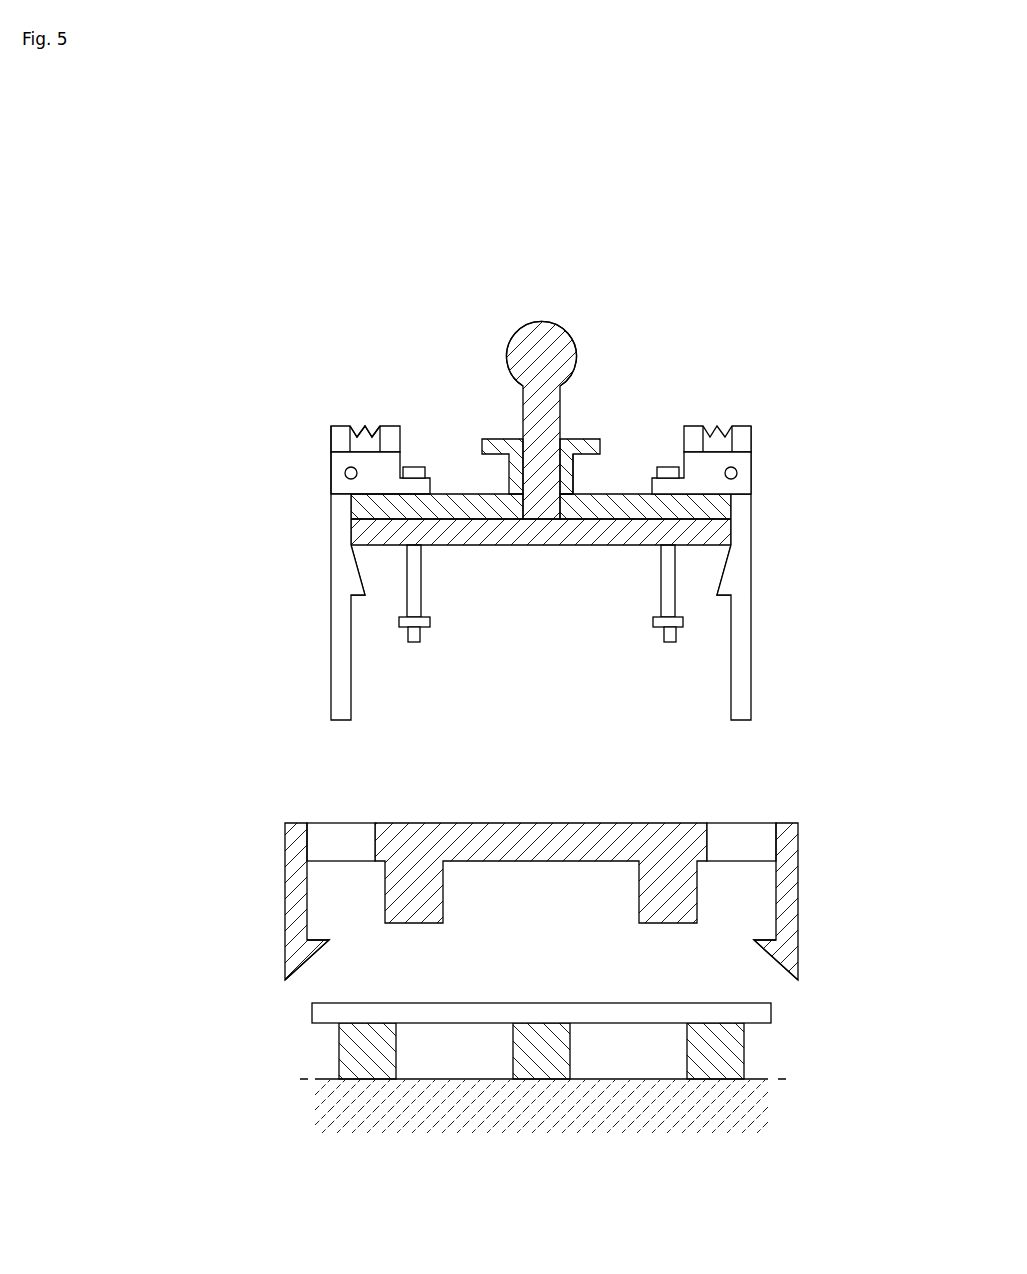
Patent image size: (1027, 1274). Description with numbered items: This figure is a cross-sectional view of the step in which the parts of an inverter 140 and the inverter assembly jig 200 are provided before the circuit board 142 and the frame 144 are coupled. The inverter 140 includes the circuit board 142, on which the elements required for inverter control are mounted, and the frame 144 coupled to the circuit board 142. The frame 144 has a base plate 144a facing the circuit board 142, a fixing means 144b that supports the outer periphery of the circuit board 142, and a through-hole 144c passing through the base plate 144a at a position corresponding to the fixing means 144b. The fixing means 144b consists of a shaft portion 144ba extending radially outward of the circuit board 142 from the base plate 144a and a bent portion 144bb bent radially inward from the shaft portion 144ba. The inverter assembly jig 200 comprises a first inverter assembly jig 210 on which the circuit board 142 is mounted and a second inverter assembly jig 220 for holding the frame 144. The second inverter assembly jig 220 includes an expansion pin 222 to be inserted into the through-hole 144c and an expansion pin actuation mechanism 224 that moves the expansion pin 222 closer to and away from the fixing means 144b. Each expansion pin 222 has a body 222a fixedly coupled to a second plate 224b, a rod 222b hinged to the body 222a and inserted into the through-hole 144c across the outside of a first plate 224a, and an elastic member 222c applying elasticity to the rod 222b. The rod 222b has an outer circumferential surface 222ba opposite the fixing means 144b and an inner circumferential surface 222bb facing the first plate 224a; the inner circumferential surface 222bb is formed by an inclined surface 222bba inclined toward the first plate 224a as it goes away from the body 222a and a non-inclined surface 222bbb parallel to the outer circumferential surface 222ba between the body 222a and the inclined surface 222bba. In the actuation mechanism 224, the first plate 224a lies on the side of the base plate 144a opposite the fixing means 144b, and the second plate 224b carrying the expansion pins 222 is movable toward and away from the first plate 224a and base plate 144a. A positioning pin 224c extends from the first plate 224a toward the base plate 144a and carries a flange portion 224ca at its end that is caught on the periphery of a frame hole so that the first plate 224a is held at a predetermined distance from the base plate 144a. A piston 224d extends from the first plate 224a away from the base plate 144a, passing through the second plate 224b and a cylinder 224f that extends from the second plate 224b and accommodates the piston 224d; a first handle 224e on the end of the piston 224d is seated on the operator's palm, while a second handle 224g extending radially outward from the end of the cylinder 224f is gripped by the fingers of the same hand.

The inverter 140 is at (796, 94).
The circuit board 142 is at (210, 1005).
The frame 144 is at (185, 822).
The base plate 144a is at (540, 835).
The fixing means 144b is at (183, 898).
The shaft portion 144ba is at (305, 900).
The bent portion 144bb is at (305, 946).
The through-hole 144c is at (352, 835).
The inverter assembly jig 200 is at (796, 183).
The first inverter assembly jig 210 is at (232, 1047).
The second inverter assembly jig 220 is at (450, 217).
The expansion pin 222 is at (385, 414).
The body 222a is at (340, 480).
The rod 222b is at (330, 433).
The elastic member 222c is at (360, 424).
The outer circumferential surface 222ba is at (331, 660).
The inner circumferential surface 222bb is at (212, 530).
The inclined surface 222bba is at (370, 570).
The non-inclined surface 222bbb is at (358, 540).
The expansion pin actuation mechanism 224 is at (517, 319).
The first plate 224a is at (717, 535).
The second plate 224b is at (717, 507).
The positioning pin 224c is at (668, 603).
The flange portion 224ca is at (683, 625).
The piston 224d is at (551, 403).
The first handle 224e is at (563, 343).
The cylinder 224f is at (567, 482).
The second handle 224g is at (602, 443).